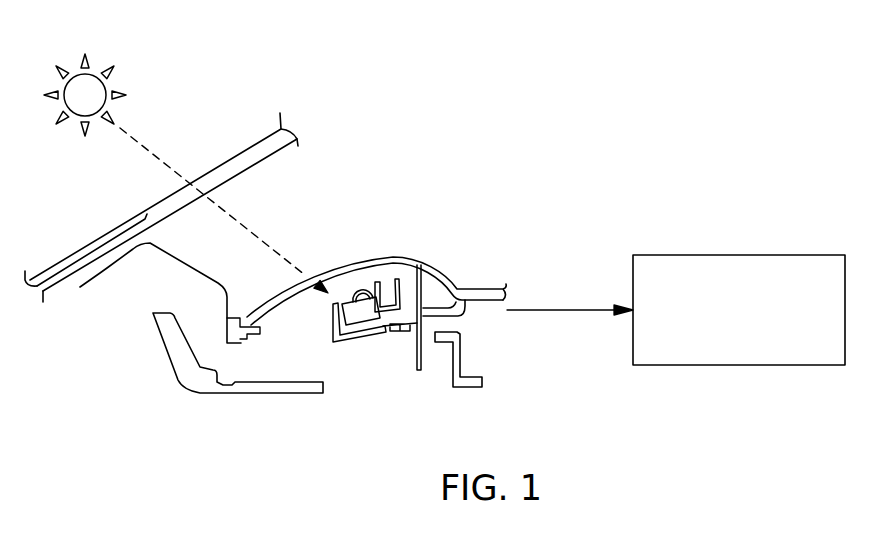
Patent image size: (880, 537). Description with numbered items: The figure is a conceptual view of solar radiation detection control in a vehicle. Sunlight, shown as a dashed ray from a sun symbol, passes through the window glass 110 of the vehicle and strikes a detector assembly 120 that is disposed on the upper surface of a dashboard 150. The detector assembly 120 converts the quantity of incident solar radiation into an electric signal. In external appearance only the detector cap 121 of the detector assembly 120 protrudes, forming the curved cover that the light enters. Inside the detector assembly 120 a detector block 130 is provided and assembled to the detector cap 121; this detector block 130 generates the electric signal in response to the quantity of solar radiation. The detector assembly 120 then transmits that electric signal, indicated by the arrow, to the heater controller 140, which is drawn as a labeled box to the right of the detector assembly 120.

The window glass 110 is at (237, 155).
The detector assembly 120 is at (396, 243).
The detector cap 121 is at (287, 277).
The detector block 130 is at (363, 315).
The heater controller 140 is at (737, 253).
The dashboard 150 is at (223, 355).